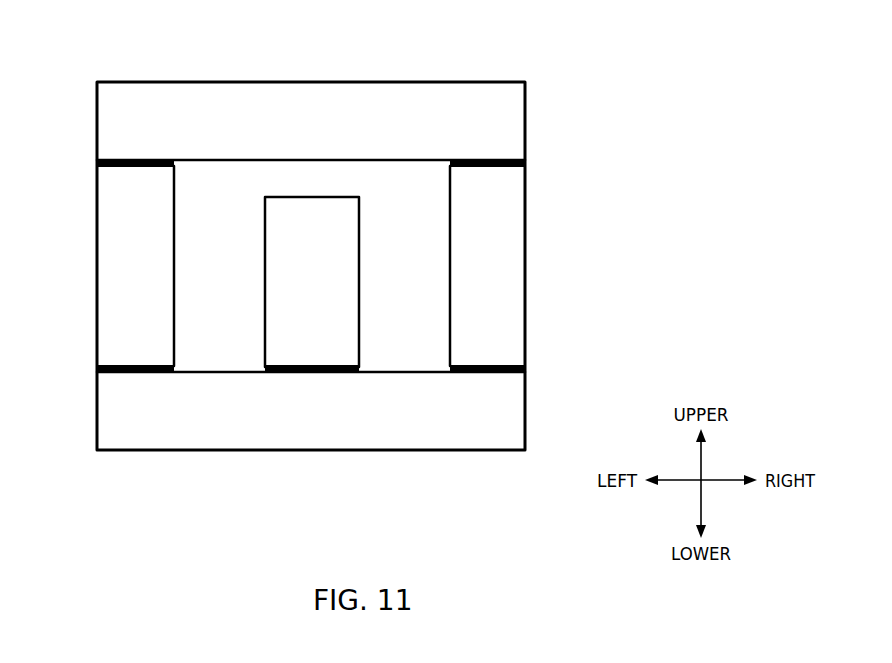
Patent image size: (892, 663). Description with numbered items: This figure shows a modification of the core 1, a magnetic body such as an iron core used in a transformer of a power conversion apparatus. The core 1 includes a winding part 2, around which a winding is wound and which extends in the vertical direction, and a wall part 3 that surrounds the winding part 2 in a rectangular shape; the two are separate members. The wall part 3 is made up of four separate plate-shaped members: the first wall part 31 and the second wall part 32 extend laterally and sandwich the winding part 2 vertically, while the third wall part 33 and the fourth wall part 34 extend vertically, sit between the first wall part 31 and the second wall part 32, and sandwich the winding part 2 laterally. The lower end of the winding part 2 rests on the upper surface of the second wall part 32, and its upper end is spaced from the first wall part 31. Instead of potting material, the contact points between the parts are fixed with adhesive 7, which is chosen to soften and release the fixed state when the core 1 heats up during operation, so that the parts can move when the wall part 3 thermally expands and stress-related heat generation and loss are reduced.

The core 1 is at (661, 42).
The winding part 2 is at (307, 333).
The wall part 3 is at (488, 78).
The adhesive 7 is at (97, 162).
The first wall part 31 is at (272, 105).
The second wall part 32 is at (227, 420).
The third wall part 33 is at (495, 250).
The fourth wall part 34 is at (113, 286).